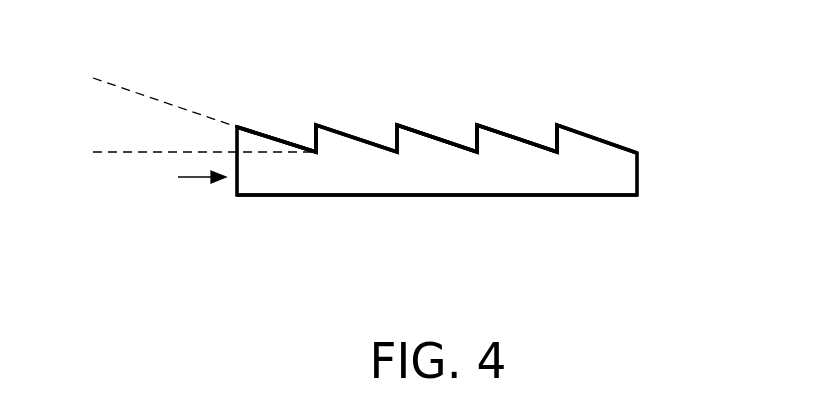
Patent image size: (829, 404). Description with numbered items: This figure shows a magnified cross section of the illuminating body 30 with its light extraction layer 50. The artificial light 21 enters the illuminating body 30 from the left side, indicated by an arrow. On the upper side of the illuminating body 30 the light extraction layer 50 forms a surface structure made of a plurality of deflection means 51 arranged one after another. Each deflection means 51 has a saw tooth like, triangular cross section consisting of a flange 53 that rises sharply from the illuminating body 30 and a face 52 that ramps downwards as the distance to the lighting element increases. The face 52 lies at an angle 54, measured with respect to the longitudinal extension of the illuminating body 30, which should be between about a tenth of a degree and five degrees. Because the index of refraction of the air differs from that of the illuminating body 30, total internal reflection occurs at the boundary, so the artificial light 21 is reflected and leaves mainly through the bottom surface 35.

The artificial light 21 is at (196, 185).
The illuminating body 30 is at (622, 176).
The bottom surface 35 is at (471, 197).
The light extraction layer 50 is at (599, 130).
The deflection means 51 is at (504, 148).
The face 52 is at (422, 130).
The flange 53 is at (313, 141).
The angle 54 is at (150, 116).